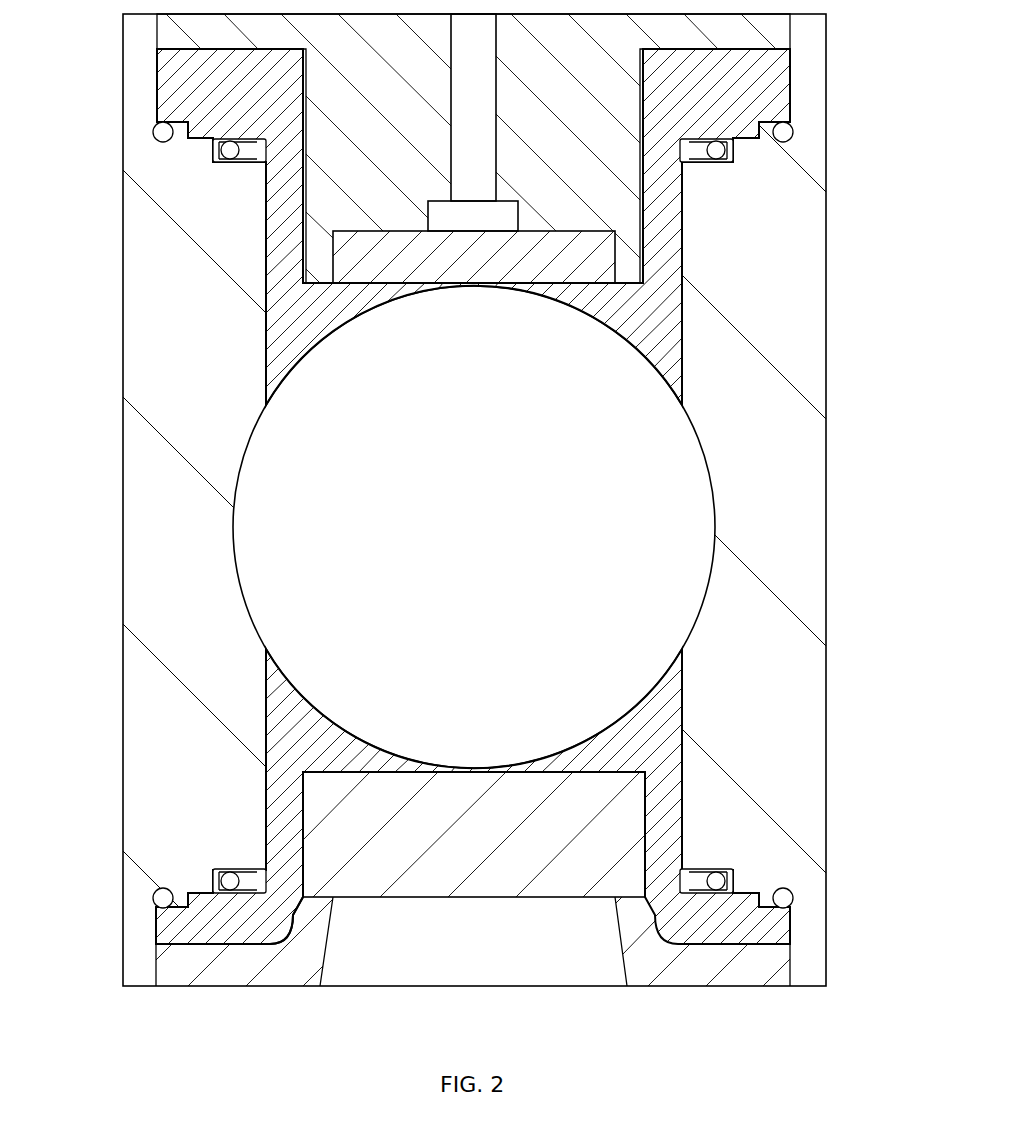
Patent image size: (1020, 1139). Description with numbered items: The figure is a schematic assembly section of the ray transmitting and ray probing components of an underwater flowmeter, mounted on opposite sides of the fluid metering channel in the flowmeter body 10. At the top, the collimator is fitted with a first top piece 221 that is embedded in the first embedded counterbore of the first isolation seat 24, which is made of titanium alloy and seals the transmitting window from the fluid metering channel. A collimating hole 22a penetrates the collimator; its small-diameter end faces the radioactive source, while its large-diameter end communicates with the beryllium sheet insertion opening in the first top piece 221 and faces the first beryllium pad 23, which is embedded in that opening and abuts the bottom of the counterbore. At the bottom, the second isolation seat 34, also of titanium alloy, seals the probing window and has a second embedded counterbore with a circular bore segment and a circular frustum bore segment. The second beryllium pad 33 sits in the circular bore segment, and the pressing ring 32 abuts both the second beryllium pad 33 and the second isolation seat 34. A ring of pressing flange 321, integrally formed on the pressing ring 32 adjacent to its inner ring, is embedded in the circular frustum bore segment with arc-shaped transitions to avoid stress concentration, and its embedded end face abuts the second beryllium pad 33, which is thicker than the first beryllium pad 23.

The flowmeter body 10 is at (749, 368).
The collimating hole 22a is at (477, 123).
The first top piece 221 is at (372, 183).
The first beryllium pad 23 is at (535, 263).
The first isolation seat 24 is at (651, 325).
The second isolation seat 34 is at (662, 812).
The second beryllium pad 33 is at (432, 840).
The pressing flange 321 is at (307, 913).
The pressing ring 32 is at (688, 967).